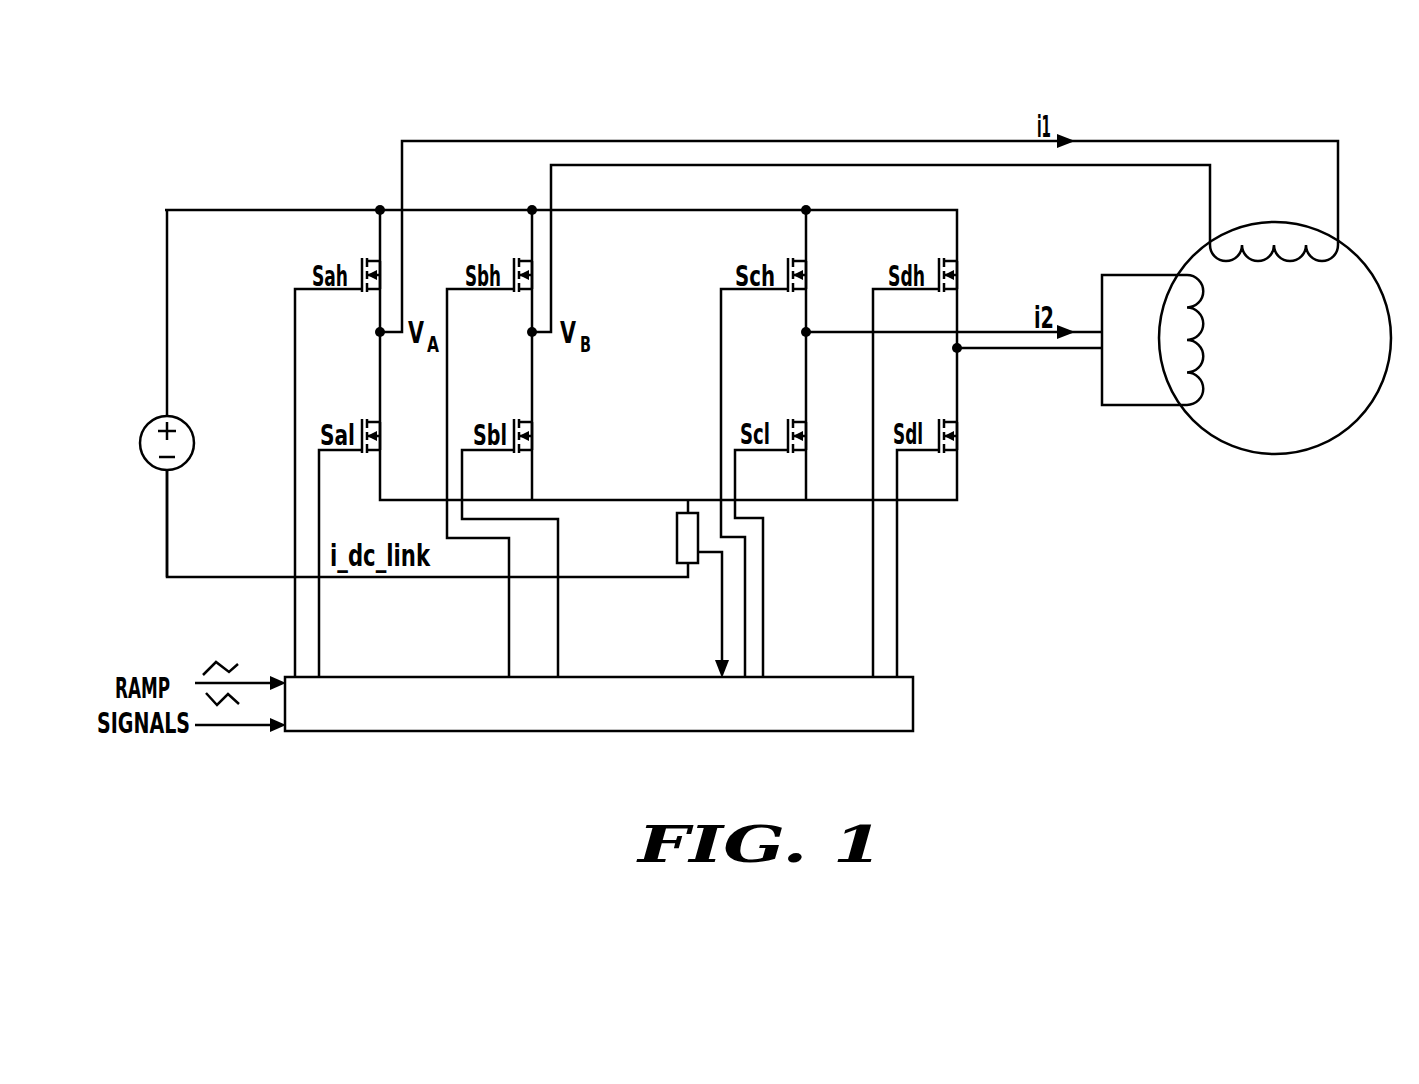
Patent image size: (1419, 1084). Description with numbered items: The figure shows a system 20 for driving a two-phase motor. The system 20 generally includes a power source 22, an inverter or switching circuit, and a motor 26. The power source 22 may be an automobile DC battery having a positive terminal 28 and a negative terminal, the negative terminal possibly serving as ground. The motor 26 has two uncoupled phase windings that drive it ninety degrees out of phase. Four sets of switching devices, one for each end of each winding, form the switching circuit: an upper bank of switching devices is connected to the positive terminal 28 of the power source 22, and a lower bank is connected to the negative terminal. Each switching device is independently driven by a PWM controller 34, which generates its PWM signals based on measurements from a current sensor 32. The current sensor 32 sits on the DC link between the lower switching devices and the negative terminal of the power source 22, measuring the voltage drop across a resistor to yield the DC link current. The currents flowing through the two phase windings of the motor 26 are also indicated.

The system 20 is at (167, 472).
The power source 22 is at (140, 443).
The motor 26 is at (1350, 430).
The positive terminal 28 is at (167, 415).
The current sensor 32 is at (677, 540).
The PWM controller 34 is at (897, 731).